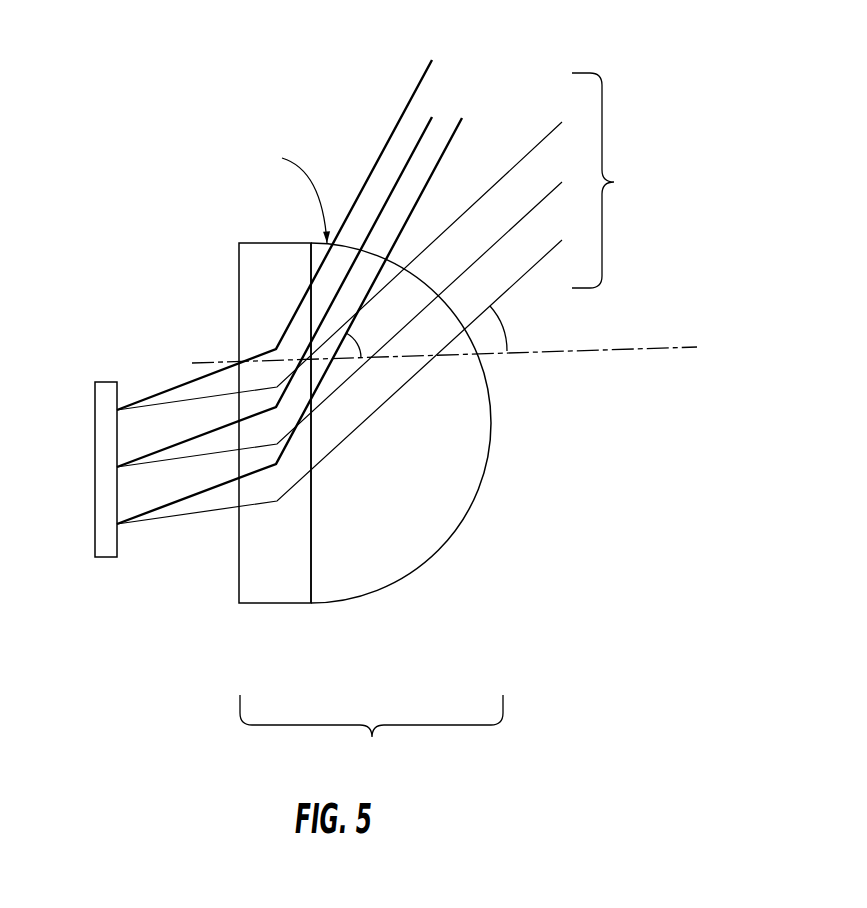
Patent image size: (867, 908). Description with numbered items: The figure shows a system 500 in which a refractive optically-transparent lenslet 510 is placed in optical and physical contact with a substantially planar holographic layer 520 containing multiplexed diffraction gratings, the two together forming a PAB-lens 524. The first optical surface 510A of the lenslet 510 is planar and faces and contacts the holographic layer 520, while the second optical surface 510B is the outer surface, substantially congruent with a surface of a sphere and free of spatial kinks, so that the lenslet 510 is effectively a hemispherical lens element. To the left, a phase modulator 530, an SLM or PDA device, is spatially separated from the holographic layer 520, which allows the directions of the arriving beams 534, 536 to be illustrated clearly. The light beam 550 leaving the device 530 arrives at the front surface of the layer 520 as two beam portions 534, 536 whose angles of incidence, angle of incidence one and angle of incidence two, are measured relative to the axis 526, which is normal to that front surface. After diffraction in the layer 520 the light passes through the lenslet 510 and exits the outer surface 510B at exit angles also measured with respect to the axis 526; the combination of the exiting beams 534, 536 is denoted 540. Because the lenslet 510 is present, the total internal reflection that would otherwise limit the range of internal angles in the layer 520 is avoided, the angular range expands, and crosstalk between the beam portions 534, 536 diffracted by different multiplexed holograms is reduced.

The system 500 is at (178, 170).
The refractive optically-transparent lenslet 510 is at (452, 441).
The first optical surface 510A is at (315, 488).
The second optical surface 510B is at (500, 442).
The holographic layer 520 is at (293, 586).
The PAB-lens 524 is at (371, 736).
The axis 526 is at (689, 348).
The phase modulator 530 is at (85, 449).
The beam 534 is at (193, 607).
The beam 536 is at (553, 322).
The combination of the beams 540 is at (613, 180).
The light beam 550 is at (178, 497).